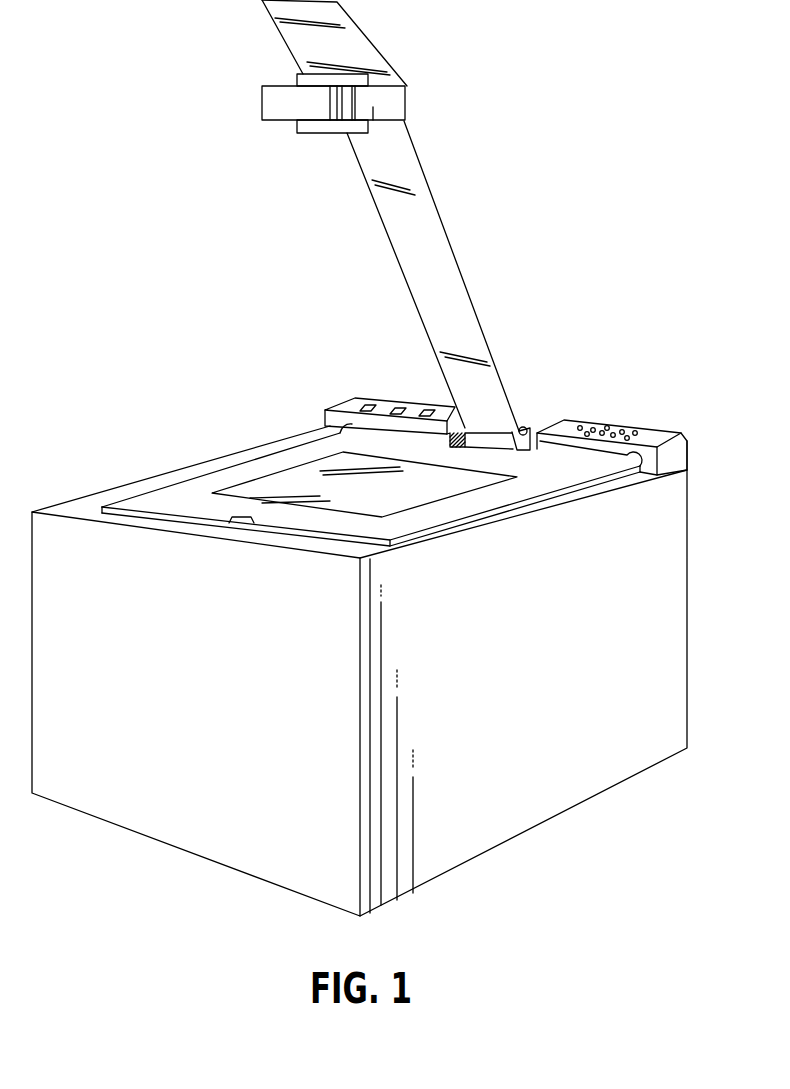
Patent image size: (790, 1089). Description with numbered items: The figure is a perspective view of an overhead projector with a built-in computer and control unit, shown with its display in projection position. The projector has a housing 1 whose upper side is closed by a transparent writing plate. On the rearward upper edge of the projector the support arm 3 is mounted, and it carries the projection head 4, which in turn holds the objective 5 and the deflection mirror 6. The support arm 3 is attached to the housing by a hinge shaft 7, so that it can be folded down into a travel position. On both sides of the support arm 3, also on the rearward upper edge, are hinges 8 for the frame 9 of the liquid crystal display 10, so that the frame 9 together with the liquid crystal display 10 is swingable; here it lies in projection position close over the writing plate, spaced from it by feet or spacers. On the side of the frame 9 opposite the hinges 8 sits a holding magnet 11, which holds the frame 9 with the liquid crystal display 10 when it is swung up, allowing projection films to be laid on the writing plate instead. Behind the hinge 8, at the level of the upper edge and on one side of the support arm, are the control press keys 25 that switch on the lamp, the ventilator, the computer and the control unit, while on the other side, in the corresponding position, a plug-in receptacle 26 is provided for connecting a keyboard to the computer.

The housing 1 is at (562, 758).
The support arm 3 is at (405, 143).
The projection head 4 is at (397, 93).
The objective 5 is at (300, 128).
The deflection mirror 6 is at (350, 33).
The hinge shaft 7 is at (523, 427).
The hinges 8 is at (358, 417).
The frame 9 is at (185, 495).
The liquid crystal display 10 is at (293, 495).
The holding magnet 11 is at (240, 517).
The control press keys 25 is at (427, 410).
The plug-in receptacle 26 is at (603, 432).